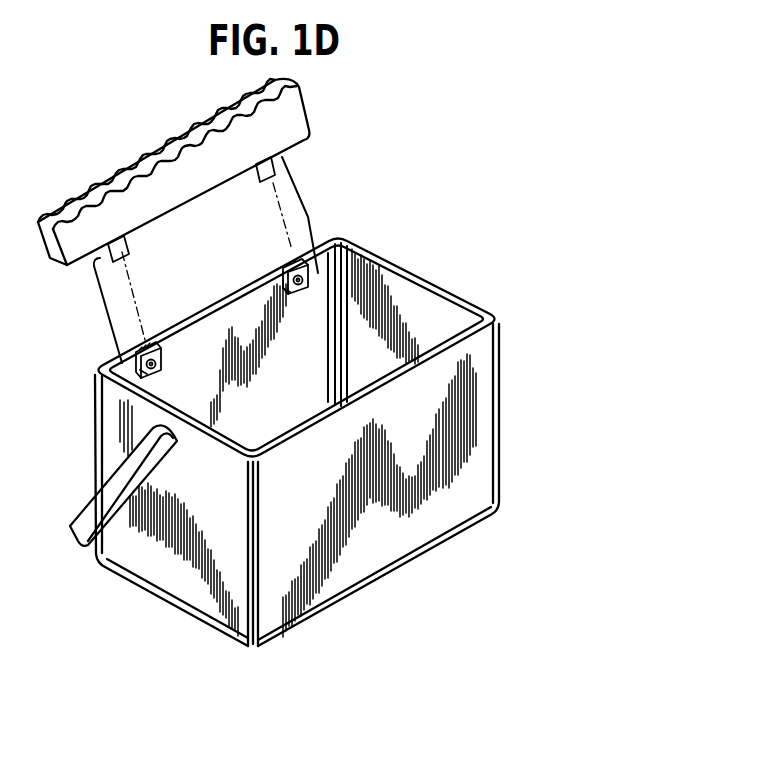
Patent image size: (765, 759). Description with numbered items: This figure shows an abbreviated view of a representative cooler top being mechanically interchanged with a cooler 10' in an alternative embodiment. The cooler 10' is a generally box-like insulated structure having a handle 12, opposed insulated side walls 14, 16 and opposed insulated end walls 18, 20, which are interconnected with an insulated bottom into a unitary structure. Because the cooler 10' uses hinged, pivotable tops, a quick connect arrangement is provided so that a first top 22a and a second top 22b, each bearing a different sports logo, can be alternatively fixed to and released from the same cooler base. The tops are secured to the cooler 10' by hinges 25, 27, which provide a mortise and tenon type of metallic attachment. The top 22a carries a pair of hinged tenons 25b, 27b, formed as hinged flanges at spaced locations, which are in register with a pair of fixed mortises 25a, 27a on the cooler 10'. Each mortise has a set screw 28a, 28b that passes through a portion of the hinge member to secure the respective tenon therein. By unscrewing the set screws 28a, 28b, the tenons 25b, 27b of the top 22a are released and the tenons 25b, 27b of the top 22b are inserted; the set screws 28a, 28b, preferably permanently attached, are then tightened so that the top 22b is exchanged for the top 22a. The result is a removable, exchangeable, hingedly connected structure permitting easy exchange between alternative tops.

The cooler 10' is at (328, 427).
The handle 12 is at (93, 517).
The insulated side wall 14 is at (333, 232).
The insulated side wall 16 is at (380, 580).
The insulated end wall 18 is at (172, 587).
The insulated end wall 20 is at (450, 290).
The top 22a is at (297, 115).
The top 22b is at (173, 172).
The hinge 25 is at (106, 318).
The fixed mortise 25a is at (150, 378).
The hinged tenon 25b is at (127, 251).
The hinge 27 is at (307, 214).
The fixed mortise 27a is at (285, 289).
The hinged tenon 27b is at (266, 181).
The set screw 28a is at (158, 357).
The set screw 28b is at (287, 266).